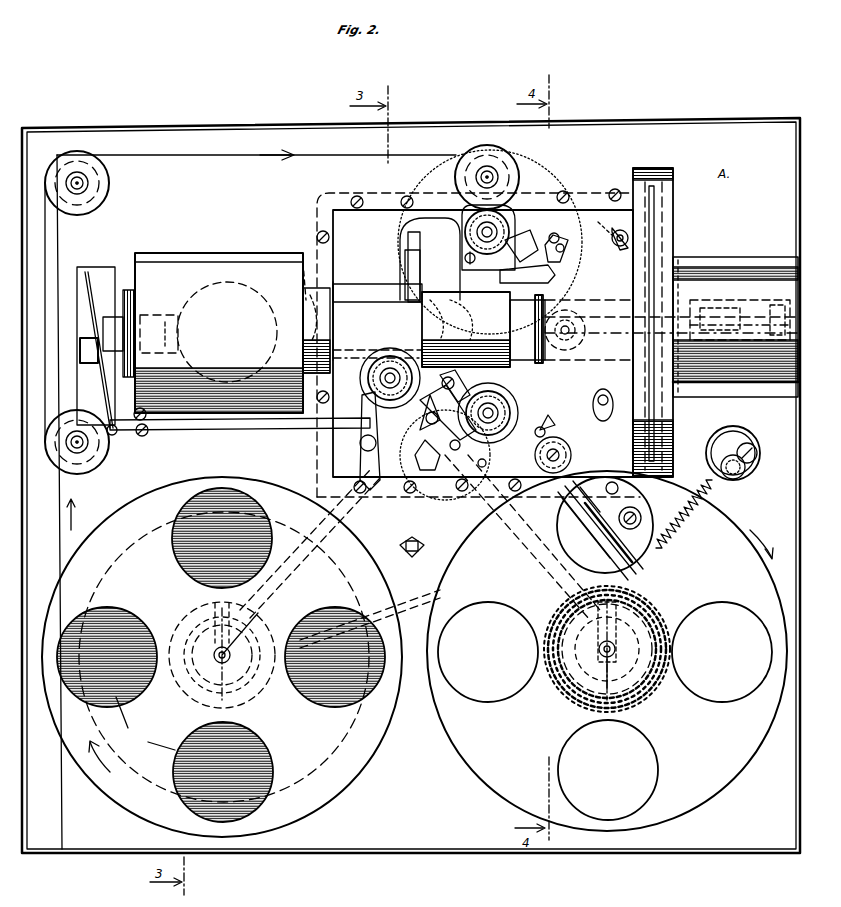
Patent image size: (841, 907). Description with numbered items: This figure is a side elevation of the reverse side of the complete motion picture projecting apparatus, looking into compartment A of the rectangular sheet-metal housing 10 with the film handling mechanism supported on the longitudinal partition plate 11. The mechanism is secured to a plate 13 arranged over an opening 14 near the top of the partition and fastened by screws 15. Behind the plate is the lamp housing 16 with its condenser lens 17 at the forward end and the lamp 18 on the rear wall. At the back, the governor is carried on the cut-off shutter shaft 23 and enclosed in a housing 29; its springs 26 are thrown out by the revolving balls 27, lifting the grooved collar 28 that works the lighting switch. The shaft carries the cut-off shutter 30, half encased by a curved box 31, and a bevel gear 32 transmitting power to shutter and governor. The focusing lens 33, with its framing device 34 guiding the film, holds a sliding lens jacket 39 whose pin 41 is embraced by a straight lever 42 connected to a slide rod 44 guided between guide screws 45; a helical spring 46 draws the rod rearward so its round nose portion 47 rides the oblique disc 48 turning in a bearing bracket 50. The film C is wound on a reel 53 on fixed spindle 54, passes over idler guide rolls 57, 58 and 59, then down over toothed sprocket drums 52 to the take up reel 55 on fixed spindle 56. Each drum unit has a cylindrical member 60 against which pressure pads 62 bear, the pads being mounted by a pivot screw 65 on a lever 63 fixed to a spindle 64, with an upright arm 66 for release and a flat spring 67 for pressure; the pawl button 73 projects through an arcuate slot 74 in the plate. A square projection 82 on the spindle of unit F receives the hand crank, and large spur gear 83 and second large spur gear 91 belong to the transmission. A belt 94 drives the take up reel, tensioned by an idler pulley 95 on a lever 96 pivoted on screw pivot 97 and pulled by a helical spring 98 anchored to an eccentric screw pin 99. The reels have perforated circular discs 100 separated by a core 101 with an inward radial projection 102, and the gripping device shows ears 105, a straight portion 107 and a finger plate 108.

The housing 10 is at (411, 480).
The partition plate 11 is at (220, 186).
The plate 13 is at (355, 490).
The opening 14 is at (317, 218).
The screws 15 is at (360, 198).
The lamp housing 16 is at (188, 262).
The condenser lens 17 is at (290, 262).
The lamp 18 is at (238, 285).
The cut-off shutter shaft 23 is at (742, 310).
The springs 26 is at (709, 327).
The balls 27 is at (772, 405).
The grooved collar 28 is at (778, 308).
The governor housing 29 is at (720, 280).
The cut-off shutter 30 is at (674, 232).
The curved box 31 is at (665, 200).
The bevel gear 32 is at (601, 244).
The focusing lens 33 is at (470, 292).
The framing device 34 is at (400, 268).
The lens jacket 39 is at (466, 329).
The pin 41 is at (408, 318).
The straight lever 42 is at (459, 386).
The slide rod 44 is at (290, 430).
The guide screws 45 is at (143, 436).
The helical spring 46 is at (448, 421).
The round nose portion 47 is at (116, 443).
The oblique disc 48 is at (95, 275).
The bearing bracket 50 is at (85, 350).
The toothed sprocket drums 52 is at (512, 235).
The reel 53 is at (224, 476).
The fixed spindle 54 is at (232, 644).
The take up reel 55 is at (720, 500).
The fixed spindle 56 is at (602, 677).
The idler guide roll 57 is at (60, 464).
The idler guide roll 58 is at (98, 163).
The idler guide roll 59 is at (512, 160).
The cylindrical member 60 is at (468, 218).
The pressure pad 62 is at (392, 345).
The lever 63 is at (478, 330).
The spindle 64 is at (308, 438).
The pivot screw 65 is at (505, 255).
The upright arm 66 is at (545, 230).
The flat spring 67 is at (580, 310).
The button 73 is at (611, 314).
The arcuate slot 74 is at (618, 327).
The square projection 82 is at (486, 457).
The large spur gear 83 is at (500, 515).
The second large spur gear 91 is at (445, 160).
The belt 94 is at (592, 535).
The take up idler pulley 95 is at (572, 452).
The lever 96 is at (609, 532).
The screw pivot 97 is at (645, 510).
The helical spring 98 is at (690, 520).
The screw pin 99 is at (720, 440).
The circular discs 100 is at (355, 763).
The core 101 is at (414, 649).
The inward radial projection 102 is at (178, 620).
The ears 105 is at (398, 664).
The straight portion 107 is at (248, 612).
The finger plate 108 is at (627, 654).